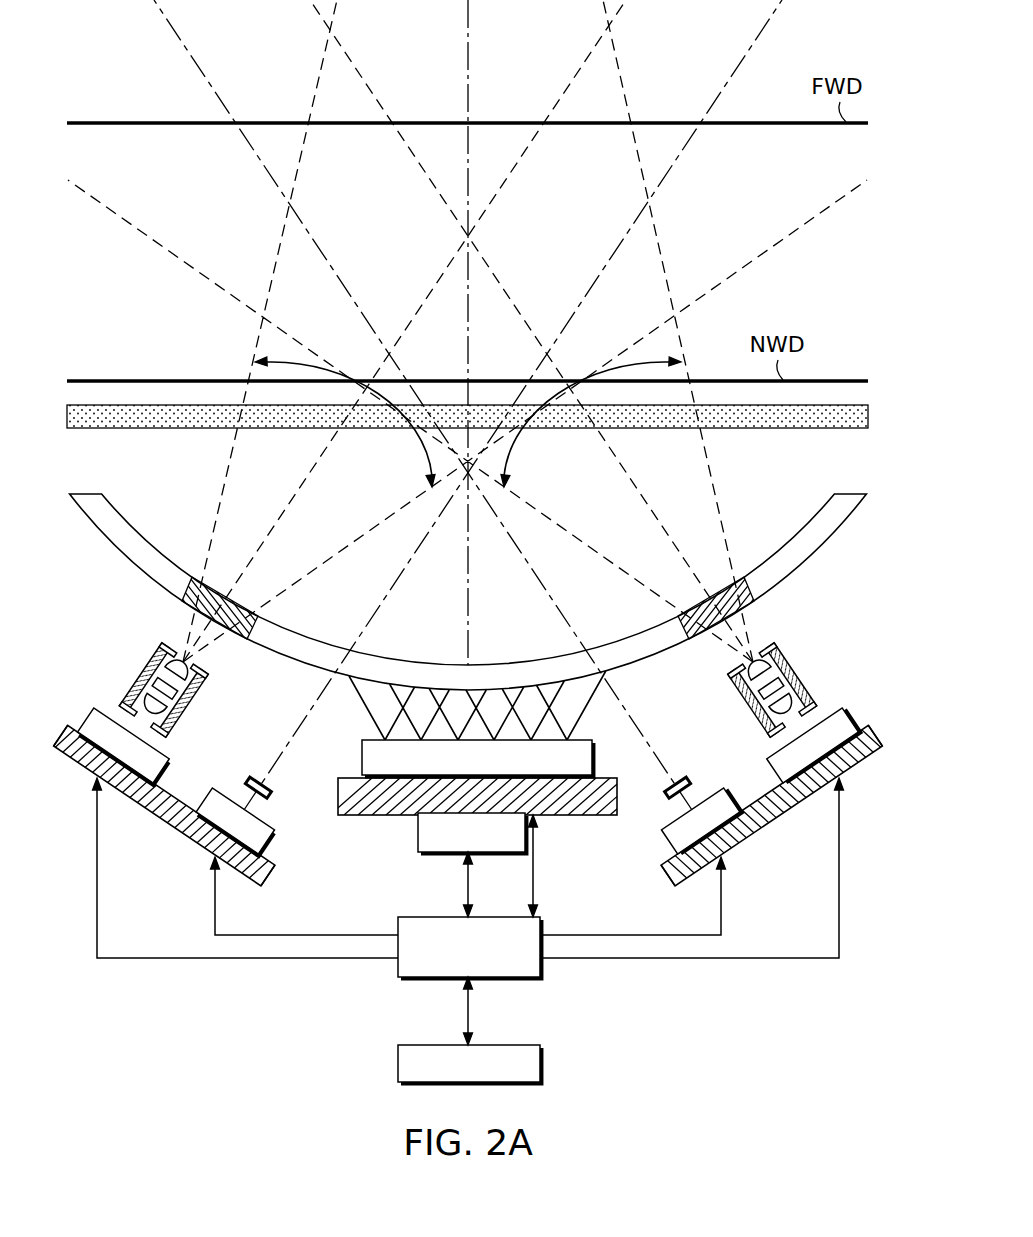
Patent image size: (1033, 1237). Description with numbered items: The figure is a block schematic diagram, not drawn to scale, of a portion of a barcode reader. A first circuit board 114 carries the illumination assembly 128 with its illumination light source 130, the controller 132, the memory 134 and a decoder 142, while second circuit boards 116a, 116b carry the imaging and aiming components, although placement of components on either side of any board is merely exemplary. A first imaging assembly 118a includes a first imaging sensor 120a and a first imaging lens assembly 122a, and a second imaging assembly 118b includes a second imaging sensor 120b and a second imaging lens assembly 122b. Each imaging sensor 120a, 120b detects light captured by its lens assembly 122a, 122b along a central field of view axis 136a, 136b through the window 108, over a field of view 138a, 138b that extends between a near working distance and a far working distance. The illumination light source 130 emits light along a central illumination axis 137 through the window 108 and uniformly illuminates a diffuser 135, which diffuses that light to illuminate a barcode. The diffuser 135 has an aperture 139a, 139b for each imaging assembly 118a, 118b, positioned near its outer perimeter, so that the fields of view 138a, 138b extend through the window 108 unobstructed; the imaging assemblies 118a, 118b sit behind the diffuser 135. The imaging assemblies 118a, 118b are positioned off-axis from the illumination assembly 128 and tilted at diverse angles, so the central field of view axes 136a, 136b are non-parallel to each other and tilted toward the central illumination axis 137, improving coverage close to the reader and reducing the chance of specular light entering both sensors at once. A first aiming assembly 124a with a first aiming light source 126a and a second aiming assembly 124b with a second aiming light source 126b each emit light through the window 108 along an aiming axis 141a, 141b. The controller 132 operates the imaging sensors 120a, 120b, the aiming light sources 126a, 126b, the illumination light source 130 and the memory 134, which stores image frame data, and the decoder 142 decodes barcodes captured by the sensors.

The window 108 is at (755, 430).
The first circuit board 114 is at (336, 795).
The second circuit board 116a is at (272, 883).
The second circuit board 116b is at (666, 882).
The first imaging assembly 118a is at (117, 809).
The second imaging assembly 118b is at (862, 790).
The first imaging sensor 120a is at (178, 763).
The second imaging sensor 120b is at (766, 757).
The first imaging lens assembly 122a is at (118, 665).
The second imaging lens assembly 122b is at (816, 661).
The first aiming assembly 124a is at (194, 858).
The second aiming assembly 124b is at (748, 860).
The first aiming light source 126a is at (270, 848).
The second aiming light source 126b is at (668, 848).
The illumination assembly 128 is at (321, 723).
The illumination light source 130 is at (360, 760).
The controller 132 is at (430, 980).
The memory 134 is at (398, 1064).
The diffuser 135 is at (122, 554).
The central field of view axis 136a is at (438, 283).
The central field of view axis 136b is at (510, 292).
The central illumination axis 137 is at (466, 58).
The field of view 138a is at (410, 447).
The field of view 138b is at (525, 447).
The aperture 139a is at (178, 606).
The aperture 139b is at (760, 607).
The aiming axis 141a is at (645, 214).
The aiming axis 141b is at (302, 222).
The decoder 142 is at (416, 837).